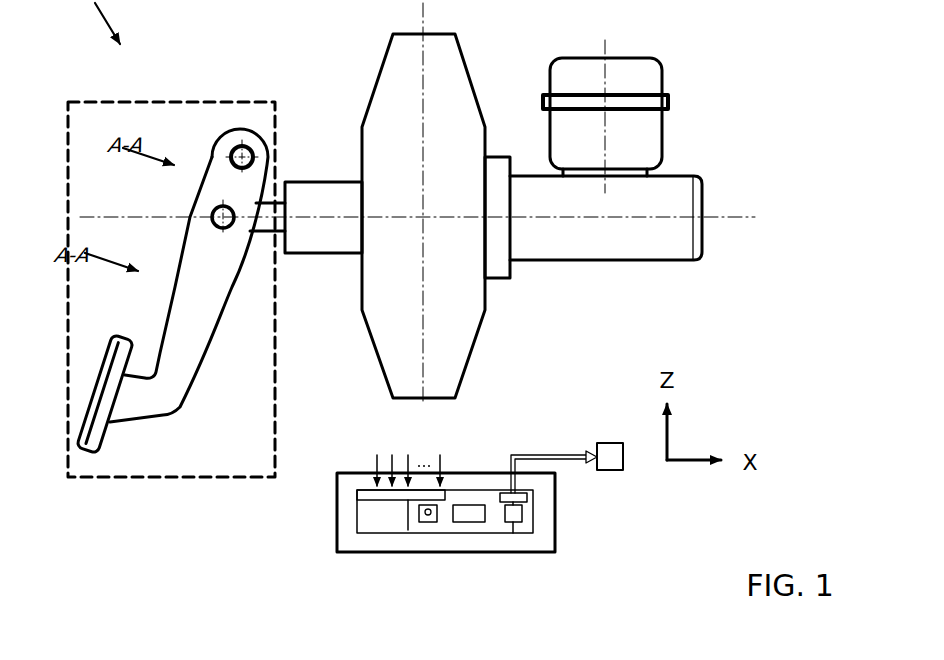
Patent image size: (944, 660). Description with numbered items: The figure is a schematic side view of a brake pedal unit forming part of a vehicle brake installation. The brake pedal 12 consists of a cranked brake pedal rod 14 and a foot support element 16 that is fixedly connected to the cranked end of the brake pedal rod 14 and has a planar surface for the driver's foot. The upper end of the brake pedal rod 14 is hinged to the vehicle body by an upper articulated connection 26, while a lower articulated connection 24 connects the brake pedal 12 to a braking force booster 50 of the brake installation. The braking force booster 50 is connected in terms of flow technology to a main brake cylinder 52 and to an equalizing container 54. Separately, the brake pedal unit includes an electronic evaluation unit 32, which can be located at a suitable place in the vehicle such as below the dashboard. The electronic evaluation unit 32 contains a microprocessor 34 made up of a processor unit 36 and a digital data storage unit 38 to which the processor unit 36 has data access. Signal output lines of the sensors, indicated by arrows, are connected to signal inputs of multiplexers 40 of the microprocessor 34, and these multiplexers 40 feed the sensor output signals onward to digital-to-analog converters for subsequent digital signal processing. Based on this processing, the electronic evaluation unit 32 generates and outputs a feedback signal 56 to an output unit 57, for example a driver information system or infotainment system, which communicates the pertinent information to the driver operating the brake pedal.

The brake pedal 12 is at (236, 354).
The brake pedal rod 14 is at (167, 381).
The foot support element 16 is at (95, 447).
The lower articulated connection 24 is at (228, 222).
The upper articulated connection 26 is at (240, 153).
The electronic evaluation unit 32 is at (431, 548).
The microprocessor 34 is at (362, 536).
The processor unit 36 is at (425, 520).
The digital data storage unit 38 is at (471, 519).
The multiplexers 40 is at (378, 498).
The braking force booster 50 is at (402, 115).
The main brake cylinder 52 is at (620, 240).
The equalizing container 54 is at (630, 77).
The feedback signal 56 is at (578, 461).
The output unit 57 is at (618, 473).